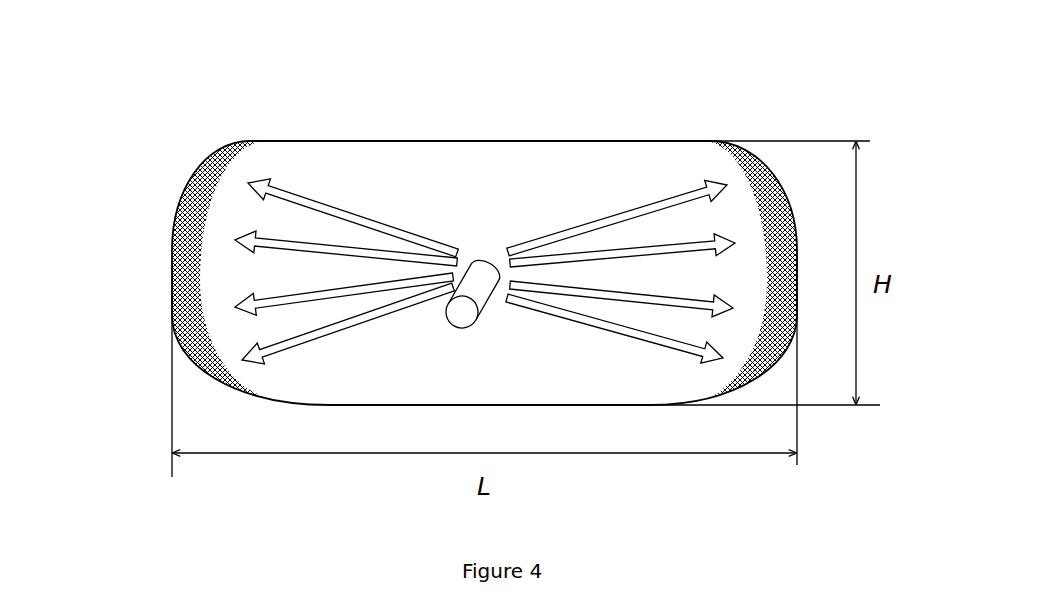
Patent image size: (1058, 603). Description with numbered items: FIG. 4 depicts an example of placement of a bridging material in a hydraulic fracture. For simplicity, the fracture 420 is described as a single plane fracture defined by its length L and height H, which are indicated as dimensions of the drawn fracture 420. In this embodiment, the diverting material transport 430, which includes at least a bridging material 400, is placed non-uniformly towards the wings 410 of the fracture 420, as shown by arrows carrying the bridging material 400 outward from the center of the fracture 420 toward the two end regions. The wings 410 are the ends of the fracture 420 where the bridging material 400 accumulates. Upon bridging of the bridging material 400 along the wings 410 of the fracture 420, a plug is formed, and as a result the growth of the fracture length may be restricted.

The bridging material 400 is at (214, 321).
The wings 410 is at (173, 232).
The fracture 420 is at (235, 395).
The diverting material transport 430 is at (590, 218).